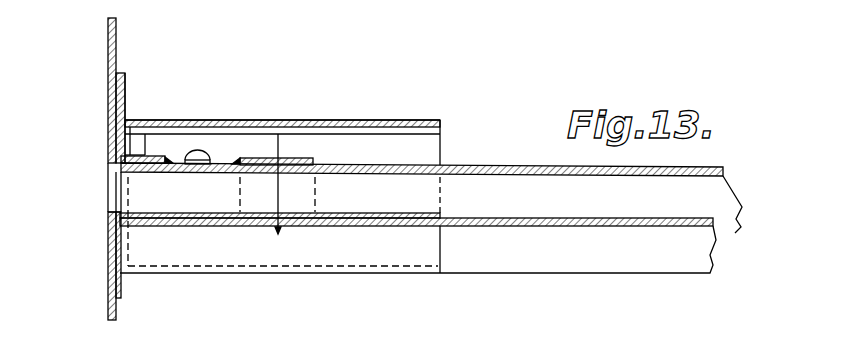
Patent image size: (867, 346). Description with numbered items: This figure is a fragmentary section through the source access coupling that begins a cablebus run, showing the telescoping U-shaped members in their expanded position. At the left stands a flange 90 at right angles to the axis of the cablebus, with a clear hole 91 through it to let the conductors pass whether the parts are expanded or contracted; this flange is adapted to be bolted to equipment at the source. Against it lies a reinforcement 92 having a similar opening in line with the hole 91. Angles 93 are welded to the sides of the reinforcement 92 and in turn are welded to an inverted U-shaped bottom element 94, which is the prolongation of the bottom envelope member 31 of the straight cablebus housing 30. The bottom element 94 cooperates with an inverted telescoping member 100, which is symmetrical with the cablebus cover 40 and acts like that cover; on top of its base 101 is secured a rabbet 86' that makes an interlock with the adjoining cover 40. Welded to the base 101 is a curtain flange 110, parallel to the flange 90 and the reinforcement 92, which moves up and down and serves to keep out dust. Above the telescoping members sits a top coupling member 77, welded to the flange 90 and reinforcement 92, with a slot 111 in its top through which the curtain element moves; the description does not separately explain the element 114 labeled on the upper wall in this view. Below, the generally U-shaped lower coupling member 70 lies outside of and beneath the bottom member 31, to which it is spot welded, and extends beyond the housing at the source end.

The cablebus housing 30 is at (467, 153).
The inverted U-shaped member 31 is at (523, 227).
The U-shaped member 40 is at (504, 166).
The generally U-shaped member 70 is at (360, 253).
The coupling member 77 is at (388, 121).
The rabbet 86' is at (292, 152).
The flange 90 is at (107, 25).
The clear hole 91 is at (108, 183).
The reinforcement 92 is at (118, 73).
The angles 93 is at (150, 142).
The inverted U-shaped bottom element 94 is at (187, 227).
The inverted telescoping member 100 is at (192, 174).
The base of a U 101 is at (153, 173).
The curtain flange 110 is at (125, 90).
The slot 111 is at (130, 118).
The wear plate 114 is at (220, 120).